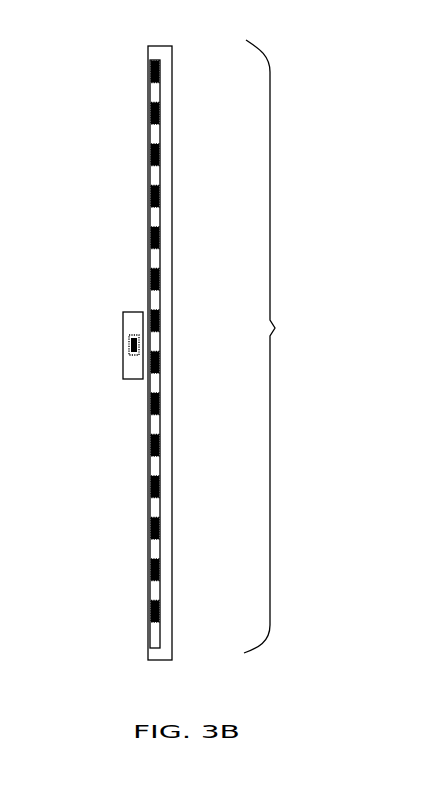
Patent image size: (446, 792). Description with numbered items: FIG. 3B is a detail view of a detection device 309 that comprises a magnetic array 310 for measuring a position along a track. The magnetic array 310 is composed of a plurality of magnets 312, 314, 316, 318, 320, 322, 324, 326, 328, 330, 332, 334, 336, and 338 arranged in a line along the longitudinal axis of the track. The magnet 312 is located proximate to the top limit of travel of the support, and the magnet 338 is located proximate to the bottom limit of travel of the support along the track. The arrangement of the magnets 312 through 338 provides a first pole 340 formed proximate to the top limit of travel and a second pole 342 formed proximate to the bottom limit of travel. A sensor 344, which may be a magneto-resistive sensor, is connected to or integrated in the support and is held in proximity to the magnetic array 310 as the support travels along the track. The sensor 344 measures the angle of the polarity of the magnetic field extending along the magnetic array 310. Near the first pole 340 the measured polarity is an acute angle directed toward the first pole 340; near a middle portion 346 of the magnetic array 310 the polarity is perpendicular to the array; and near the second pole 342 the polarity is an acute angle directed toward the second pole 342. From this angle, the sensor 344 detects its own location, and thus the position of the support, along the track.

The detection device 309 is at (276, 27).
The magnetic array 310 is at (280, 346).
The magnet 312 is at (158, 76).
The magnet 314 is at (158, 118).
The magnet 316 is at (158, 159).
The magnet 318 is at (158, 200).
The magnet 320 is at (158, 242).
The magnet 322 is at (158, 284).
The magnet 324 is at (158, 325).
The magnet 326 is at (158, 366).
The magnet 328 is at (158, 408).
The magnet 330 is at (158, 450).
The magnet 332 is at (158, 491).
The magnet 334 is at (158, 532).
The magnet 336 is at (158, 574).
The magnet 338 is at (158, 616).
The first pole 340 is at (129, 62).
The second pole 342 is at (140, 645).
The sensor 344 is at (123, 350).
The middle portion 346 is at (102, 339).